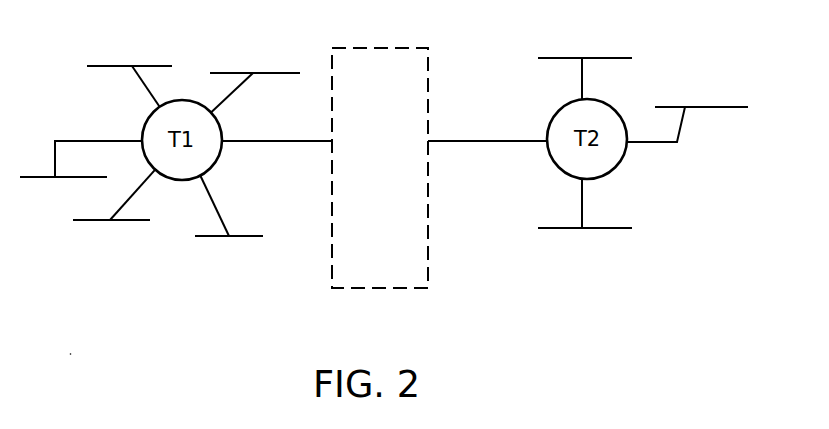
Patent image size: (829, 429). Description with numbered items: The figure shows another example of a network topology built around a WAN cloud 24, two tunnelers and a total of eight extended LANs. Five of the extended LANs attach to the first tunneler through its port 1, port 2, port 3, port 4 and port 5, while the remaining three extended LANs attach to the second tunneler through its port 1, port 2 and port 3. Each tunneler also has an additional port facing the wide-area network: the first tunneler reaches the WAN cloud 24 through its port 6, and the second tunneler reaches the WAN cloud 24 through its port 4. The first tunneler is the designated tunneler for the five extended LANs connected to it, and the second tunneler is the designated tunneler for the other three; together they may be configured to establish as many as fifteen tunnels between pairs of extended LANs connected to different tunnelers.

The WAN cloud 24 is at (380, 168).
The port # 1 is at (413, 147).
The port # 2 is at (407, 163).
The port # 3 is at (326, 198).
The port # 4 is at (317, 89).
The port # 5 is at (249, 78).
The port # 6 is at (277, 128).